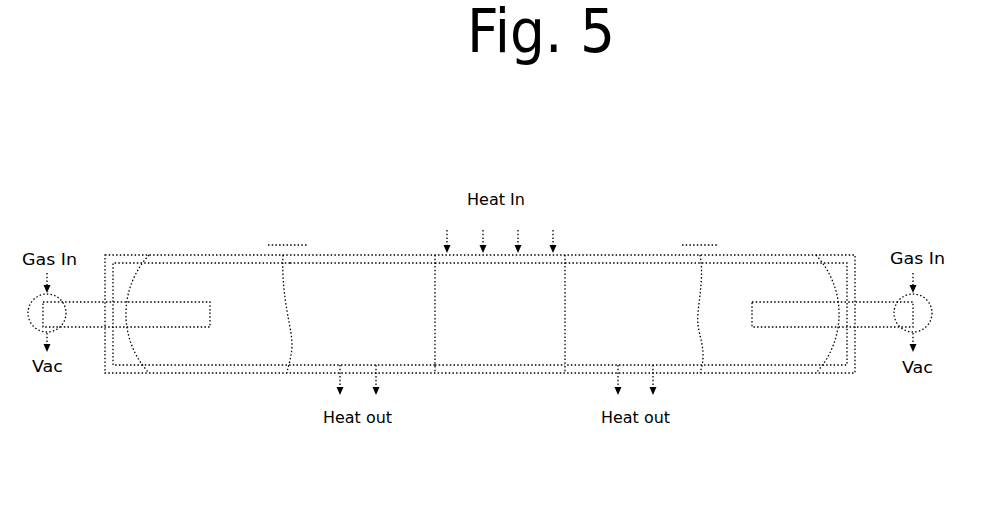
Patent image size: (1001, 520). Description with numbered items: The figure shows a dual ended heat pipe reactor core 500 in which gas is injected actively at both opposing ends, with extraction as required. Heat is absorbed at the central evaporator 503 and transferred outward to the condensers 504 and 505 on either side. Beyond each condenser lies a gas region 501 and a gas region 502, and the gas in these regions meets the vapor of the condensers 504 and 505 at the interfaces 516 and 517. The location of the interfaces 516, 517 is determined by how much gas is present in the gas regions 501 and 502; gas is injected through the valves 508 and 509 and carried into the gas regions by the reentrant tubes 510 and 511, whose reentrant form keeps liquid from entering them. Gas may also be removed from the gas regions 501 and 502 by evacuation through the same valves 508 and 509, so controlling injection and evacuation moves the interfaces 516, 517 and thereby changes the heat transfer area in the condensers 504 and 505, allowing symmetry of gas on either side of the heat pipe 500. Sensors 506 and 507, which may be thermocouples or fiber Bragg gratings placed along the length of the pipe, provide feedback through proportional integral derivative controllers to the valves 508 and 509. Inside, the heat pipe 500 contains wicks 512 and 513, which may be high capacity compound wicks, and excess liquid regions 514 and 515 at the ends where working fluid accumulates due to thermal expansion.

The dual ended heat pipe reactor core 500 is at (217, 170).
The gas region 501 is at (200, 375).
The gas region 502 is at (770, 380).
The evaporator 503 is at (527, 377).
The condenser 504 is at (335, 355).
The condenser 505 is at (647, 352).
The sensor 506 is at (310, 235).
The sensor 507 is at (677, 236).
The valve 508 is at (58, 292).
The valve 509 is at (897, 295).
The reentrant tube 510 is at (92, 317).
The reentrant tube 511 is at (877, 317).
The wick 512 is at (233, 263).
The wick 513 is at (407, 377).
The excess liquid region 514 is at (148, 368).
The excess liquid region 515 is at (828, 375).
The interface 516 is at (305, 293).
The interface 517 is at (703, 295).